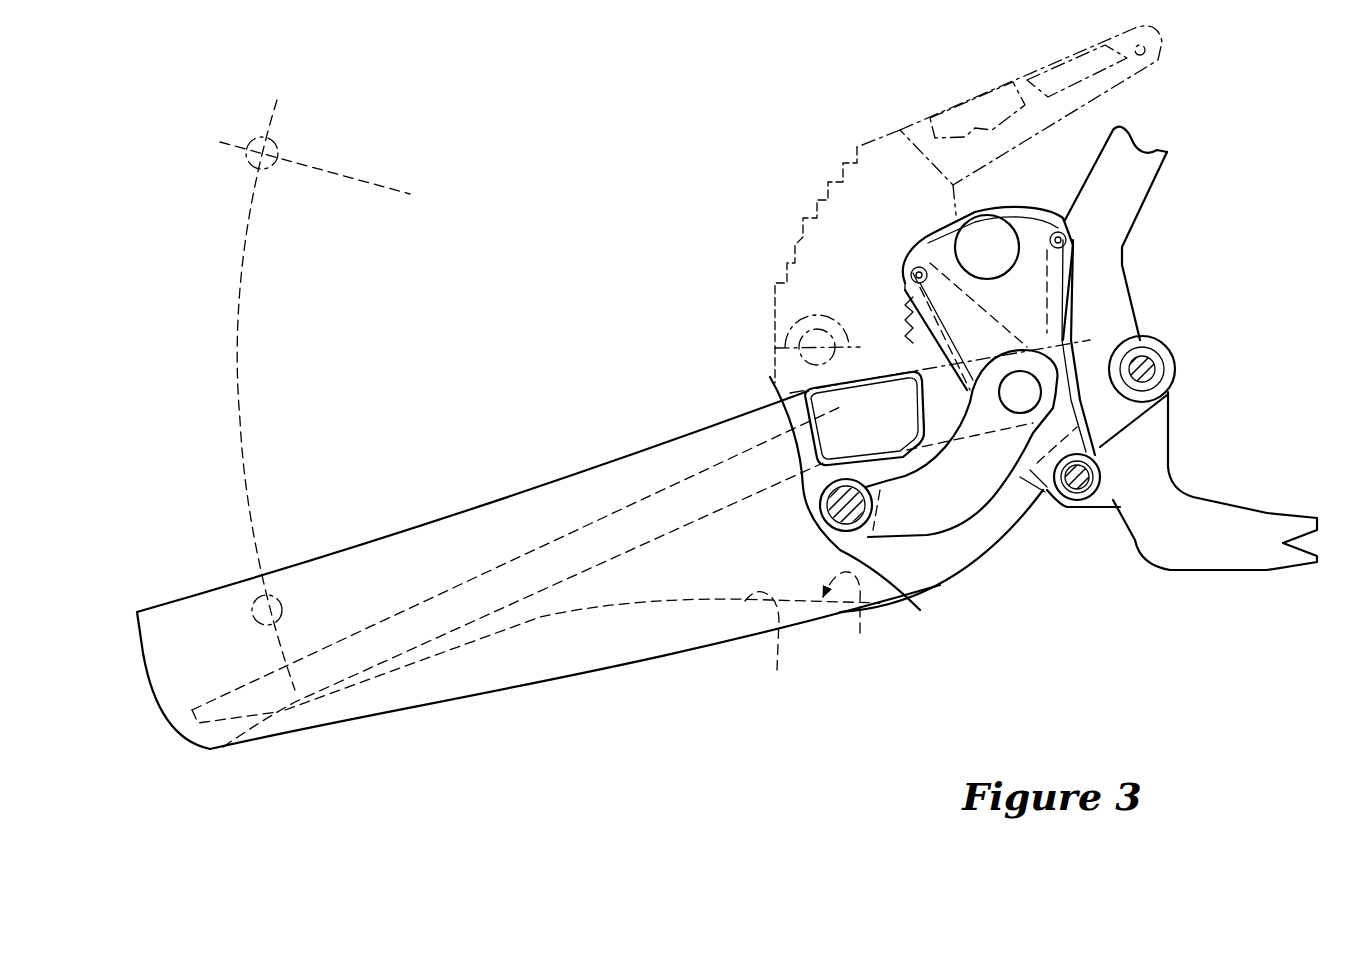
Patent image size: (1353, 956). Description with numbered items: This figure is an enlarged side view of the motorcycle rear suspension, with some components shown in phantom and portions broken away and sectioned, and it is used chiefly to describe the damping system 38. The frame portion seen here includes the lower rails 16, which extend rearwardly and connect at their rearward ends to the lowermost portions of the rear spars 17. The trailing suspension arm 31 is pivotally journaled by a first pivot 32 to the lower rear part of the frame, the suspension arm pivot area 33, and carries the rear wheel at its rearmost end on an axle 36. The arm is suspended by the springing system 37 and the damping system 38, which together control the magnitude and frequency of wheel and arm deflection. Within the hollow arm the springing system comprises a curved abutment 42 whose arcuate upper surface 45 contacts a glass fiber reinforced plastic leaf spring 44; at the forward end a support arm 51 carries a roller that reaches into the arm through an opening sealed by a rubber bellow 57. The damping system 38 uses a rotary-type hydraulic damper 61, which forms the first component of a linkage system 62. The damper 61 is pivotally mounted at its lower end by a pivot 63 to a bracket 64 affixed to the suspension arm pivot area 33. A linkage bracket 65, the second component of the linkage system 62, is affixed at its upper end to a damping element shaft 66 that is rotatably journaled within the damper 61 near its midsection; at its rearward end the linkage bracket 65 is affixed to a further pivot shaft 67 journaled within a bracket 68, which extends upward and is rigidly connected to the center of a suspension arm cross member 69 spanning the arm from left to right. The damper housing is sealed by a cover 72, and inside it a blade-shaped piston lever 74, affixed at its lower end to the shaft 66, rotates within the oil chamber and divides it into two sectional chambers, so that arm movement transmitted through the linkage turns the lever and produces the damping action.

The lower rails 16 is at (1297, 517).
The rear spars 17 is at (1167, 163).
The trailing suspension arm 31 is at (633, 447).
The first pivot 32 is at (1153, 368).
The suspension arm pivot area 33 is at (1173, 440).
The axle 36 is at (273, 167).
The springing system 37 is at (405, 487).
The damping system 38 is at (1082, 567).
The curved abutment 42 is at (845, 623).
The leaf spring 44 is at (512, 560).
The arcuate upper surface 45 is at (763, 647).
The support arm 51 is at (973, 80).
The rubber bellow 57 is at (810, 210).
The rotary-type hydraulic damper 61 is at (1042, 200).
The linkage system 62 is at (1082, 278).
The pivot 63 is at (1073, 490).
The bracket 64 is at (1107, 503).
The linkage bracket 65 is at (930, 537).
The damping element shaft 66 is at (1030, 385).
The pivot shaft 67 is at (817, 530).
The bracket 68 is at (773, 487).
The suspension arm cross member 69 is at (790, 413).
The cover 72 is at (1037, 267).
The piston lever 74 is at (990, 312).